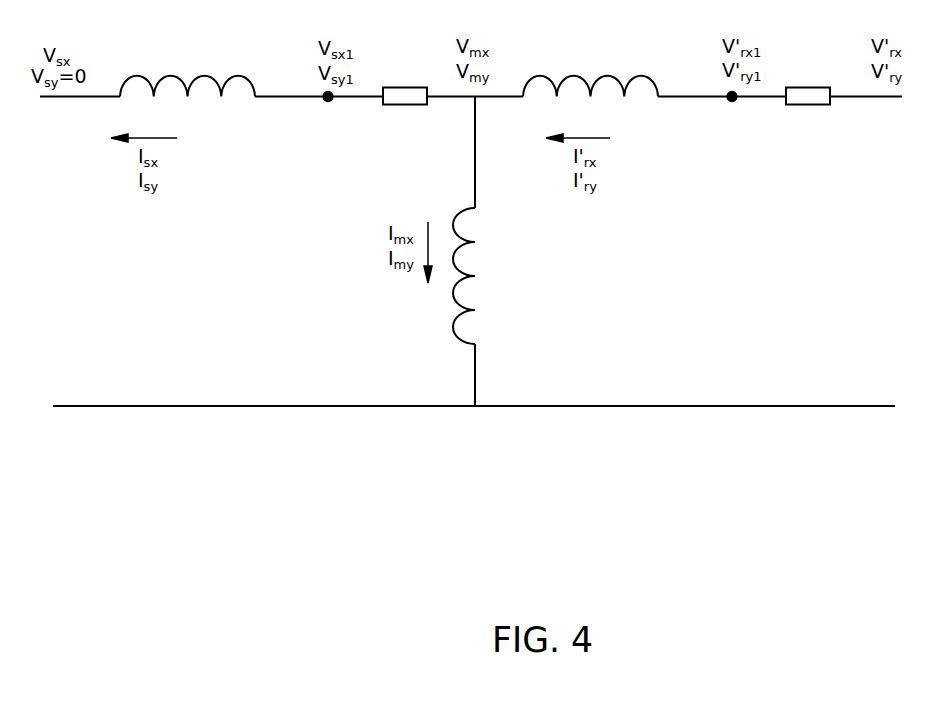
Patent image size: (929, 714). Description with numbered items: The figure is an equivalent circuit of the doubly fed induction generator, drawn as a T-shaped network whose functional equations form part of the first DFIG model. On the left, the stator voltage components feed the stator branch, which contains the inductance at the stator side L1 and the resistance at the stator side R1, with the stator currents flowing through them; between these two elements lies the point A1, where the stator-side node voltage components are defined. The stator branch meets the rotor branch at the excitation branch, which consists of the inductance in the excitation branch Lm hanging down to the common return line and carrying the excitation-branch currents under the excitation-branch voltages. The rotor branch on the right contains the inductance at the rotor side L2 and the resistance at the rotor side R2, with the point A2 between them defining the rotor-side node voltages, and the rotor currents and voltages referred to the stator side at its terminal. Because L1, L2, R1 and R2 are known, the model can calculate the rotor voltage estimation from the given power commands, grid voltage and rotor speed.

The inductance at the stator side L1 is at (187, 67).
The resistance at the stator side R1 is at (405, 80).
The inductance at the rotor side L2 is at (590, 66).
The resistance at the rotor side R2 is at (808, 80).
The inductance in the excitation branch Lm is at (485, 276).
The point A1 of the equivalent circuit A1 is at (328, 113).
The point A2 of the equivalent circuit A2 is at (732, 113).